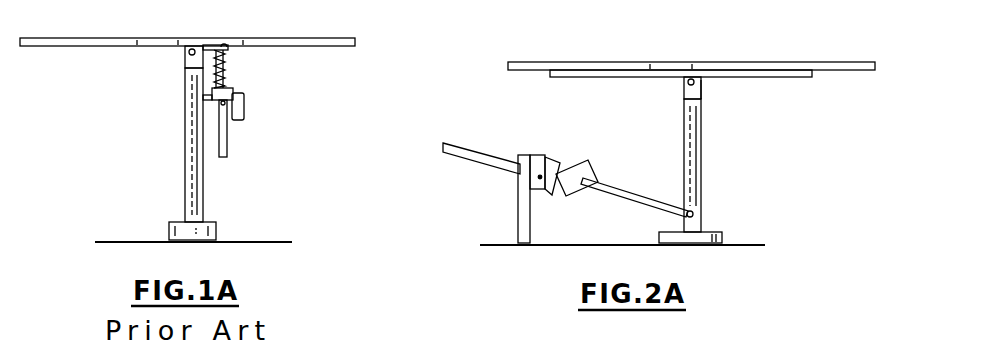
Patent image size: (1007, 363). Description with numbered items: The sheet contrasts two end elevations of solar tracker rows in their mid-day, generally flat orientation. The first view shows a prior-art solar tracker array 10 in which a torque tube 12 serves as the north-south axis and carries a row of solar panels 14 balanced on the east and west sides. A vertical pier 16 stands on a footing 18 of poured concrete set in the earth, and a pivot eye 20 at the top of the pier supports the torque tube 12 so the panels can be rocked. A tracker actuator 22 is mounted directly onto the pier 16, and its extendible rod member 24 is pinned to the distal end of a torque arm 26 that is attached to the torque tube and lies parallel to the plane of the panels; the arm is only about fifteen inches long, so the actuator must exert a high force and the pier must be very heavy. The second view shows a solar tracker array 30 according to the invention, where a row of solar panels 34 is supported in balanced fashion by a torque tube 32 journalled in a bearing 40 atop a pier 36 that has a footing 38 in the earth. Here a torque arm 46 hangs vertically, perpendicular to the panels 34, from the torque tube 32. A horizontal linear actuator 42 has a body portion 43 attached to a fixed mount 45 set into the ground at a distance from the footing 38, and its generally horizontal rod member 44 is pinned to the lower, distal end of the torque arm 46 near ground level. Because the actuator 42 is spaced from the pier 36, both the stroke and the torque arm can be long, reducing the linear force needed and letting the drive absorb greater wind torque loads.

In FIG. 1A, the solar tracker array 10 is at (74, 169).
In FIG. 1A, the torque tube 12 is at (203, 46).
In FIG. 1A, the row of solar panels 14 is at (78, 38).
In FIG. 1A, the vertical pier 16 is at (185, 143).
In FIG. 1A, the footing 18 is at (216, 232).
In FIG. 1A, the pivot eye 20 is at (185, 58).
In FIG. 1A, the tracker actuator 22 is at (248, 112).
In FIG. 1A, the extendible rod member 24 is at (233, 72).
In FIG. 1A, the torque arm 26 is at (228, 50).
In FIG. 2A, the solar tracker array 30 is at (858, 212).
In FIG. 2A, the torque tube 32 is at (701, 86).
In FIG. 2A, the row of solar panels 34 is at (620, 62).
In FIG. 2A, the pier 36 is at (700, 215).
In FIG. 2A, the footing 38 is at (665, 238).
In FIG. 2A, the bearing 40 is at (684, 90).
In FIG. 2A, the linear actuator 42 is at (494, 190).
In FIG. 2A, the body portion 43 is at (558, 160).
In FIG. 2A, the rod member 44 is at (612, 190).
In FIG. 2A, the fixed mount 45 is at (518, 226).
In FIG. 2A, the torque arm 46 is at (701, 160).